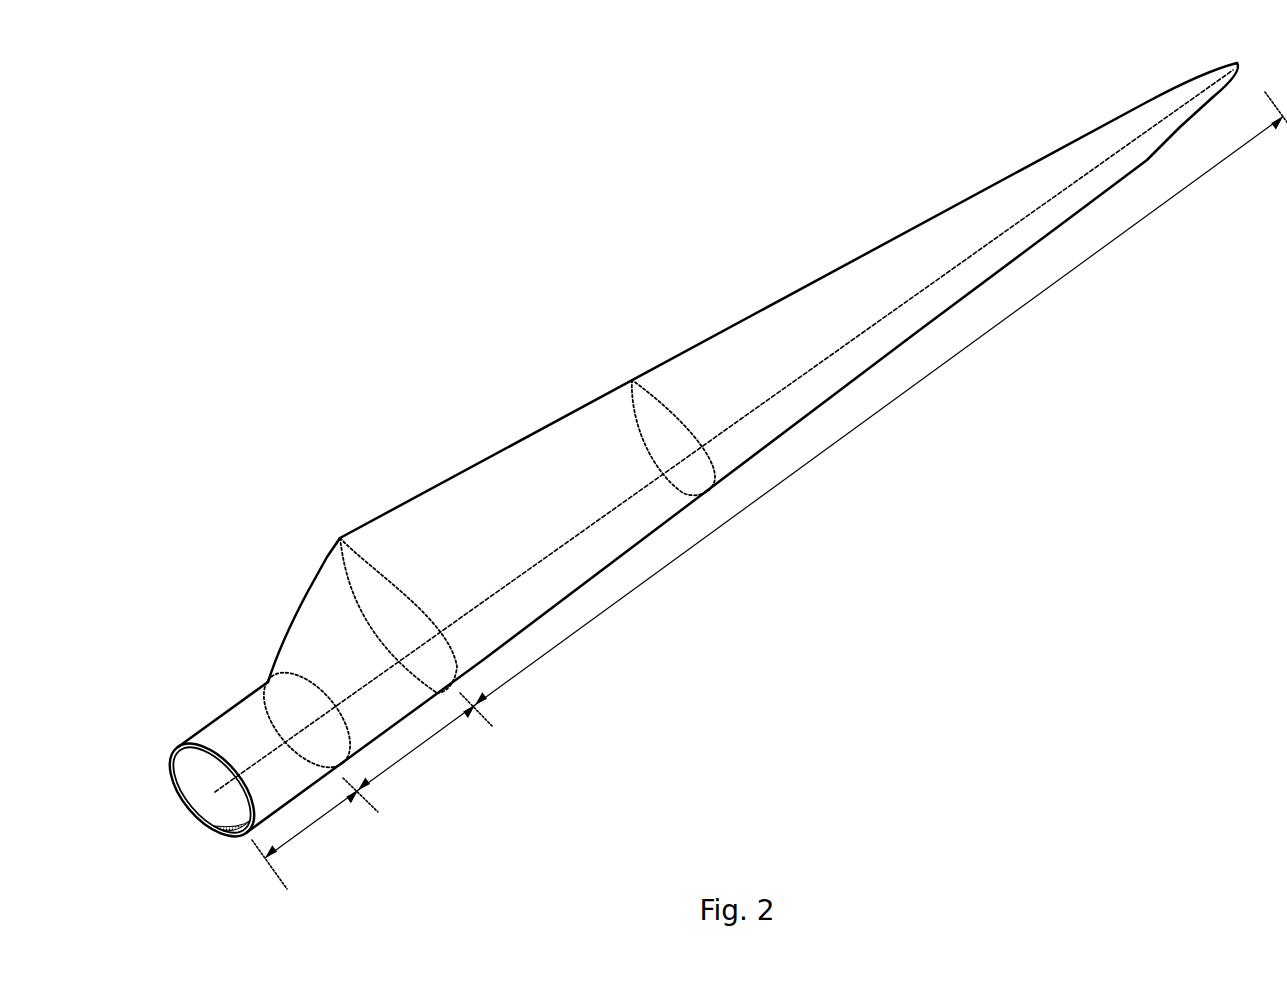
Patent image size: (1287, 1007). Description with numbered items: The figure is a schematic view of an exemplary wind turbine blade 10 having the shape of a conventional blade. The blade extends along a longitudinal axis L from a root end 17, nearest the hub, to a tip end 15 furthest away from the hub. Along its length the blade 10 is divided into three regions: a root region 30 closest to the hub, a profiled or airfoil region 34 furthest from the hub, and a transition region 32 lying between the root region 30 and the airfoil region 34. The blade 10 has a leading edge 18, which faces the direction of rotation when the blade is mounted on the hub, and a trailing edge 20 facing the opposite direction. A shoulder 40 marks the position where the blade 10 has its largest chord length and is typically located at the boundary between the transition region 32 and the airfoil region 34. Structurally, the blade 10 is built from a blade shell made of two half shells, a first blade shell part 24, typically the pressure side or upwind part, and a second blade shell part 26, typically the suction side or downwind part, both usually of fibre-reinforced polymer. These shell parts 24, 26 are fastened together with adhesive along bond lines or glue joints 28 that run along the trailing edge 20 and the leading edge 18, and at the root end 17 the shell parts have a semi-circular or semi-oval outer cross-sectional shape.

The wind turbine blade 10 is at (512, 307).
The tip end 15 is at (1237, 63).
The root end 17 is at (193, 760).
The leading edge 18 is at (917, 332).
The trailing edge 20 is at (798, 290).
The first blade shell part 24 is at (205, 747).
The second blade shell part 26 is at (207, 825).
The glue joints 28 is at (186, 746).
The root region 30 is at (318, 823).
The transition region 32 is at (422, 748).
The airfoil region 34 is at (800, 470).
The shoulder 40 is at (342, 537).
The longitudinal axis L is at (216, 792).